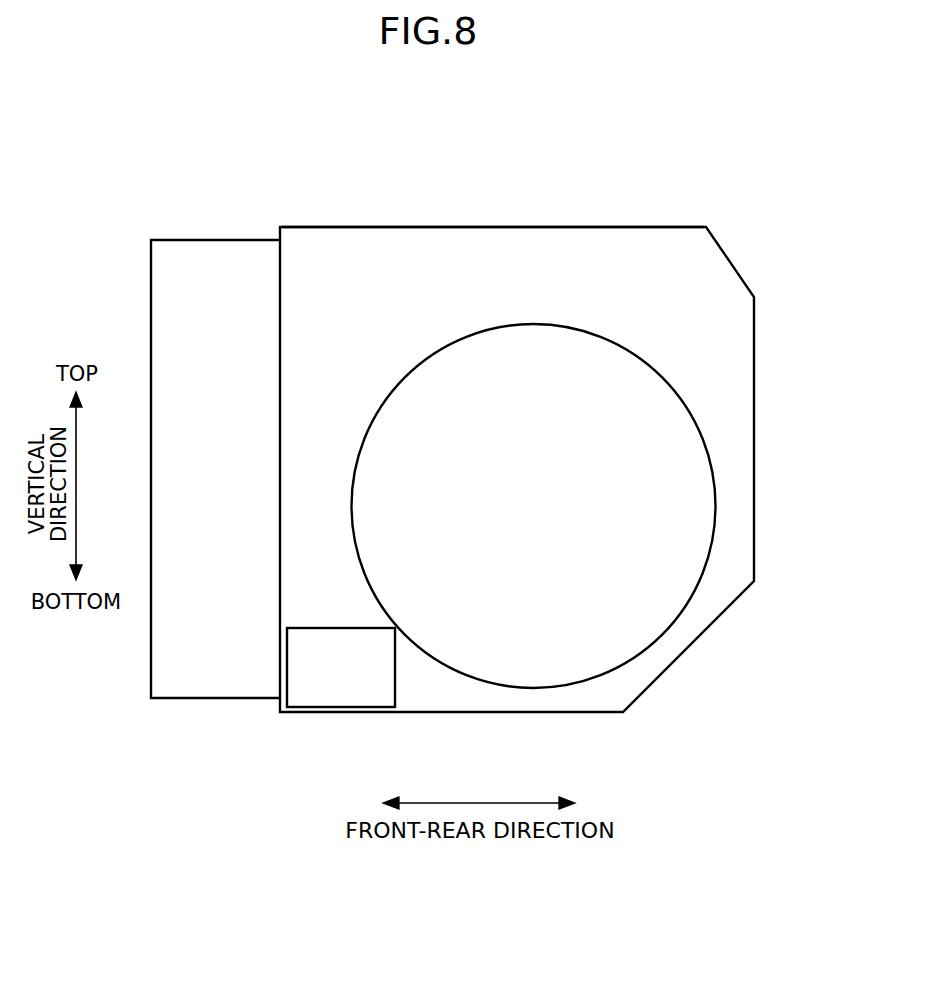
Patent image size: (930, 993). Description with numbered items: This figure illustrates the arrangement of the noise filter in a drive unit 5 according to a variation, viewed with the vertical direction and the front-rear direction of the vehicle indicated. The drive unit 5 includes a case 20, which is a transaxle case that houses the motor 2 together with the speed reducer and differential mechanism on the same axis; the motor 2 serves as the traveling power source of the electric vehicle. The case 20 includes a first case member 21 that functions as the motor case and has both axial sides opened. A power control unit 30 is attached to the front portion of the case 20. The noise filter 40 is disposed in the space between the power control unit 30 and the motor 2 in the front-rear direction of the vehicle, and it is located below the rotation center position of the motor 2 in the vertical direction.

The drive unit 5 is at (517, 167).
The case 20 is at (655, 227).
The first case member 21 is at (385, 226).
The power control unit 30 is at (221, 239).
The motor 2 is at (715, 468).
The noise filter 40 is at (396, 673).